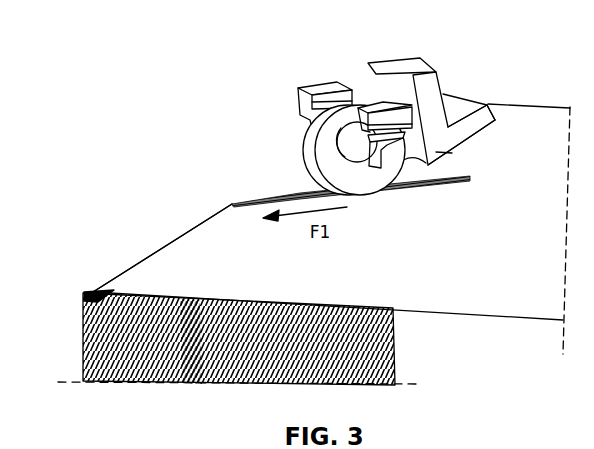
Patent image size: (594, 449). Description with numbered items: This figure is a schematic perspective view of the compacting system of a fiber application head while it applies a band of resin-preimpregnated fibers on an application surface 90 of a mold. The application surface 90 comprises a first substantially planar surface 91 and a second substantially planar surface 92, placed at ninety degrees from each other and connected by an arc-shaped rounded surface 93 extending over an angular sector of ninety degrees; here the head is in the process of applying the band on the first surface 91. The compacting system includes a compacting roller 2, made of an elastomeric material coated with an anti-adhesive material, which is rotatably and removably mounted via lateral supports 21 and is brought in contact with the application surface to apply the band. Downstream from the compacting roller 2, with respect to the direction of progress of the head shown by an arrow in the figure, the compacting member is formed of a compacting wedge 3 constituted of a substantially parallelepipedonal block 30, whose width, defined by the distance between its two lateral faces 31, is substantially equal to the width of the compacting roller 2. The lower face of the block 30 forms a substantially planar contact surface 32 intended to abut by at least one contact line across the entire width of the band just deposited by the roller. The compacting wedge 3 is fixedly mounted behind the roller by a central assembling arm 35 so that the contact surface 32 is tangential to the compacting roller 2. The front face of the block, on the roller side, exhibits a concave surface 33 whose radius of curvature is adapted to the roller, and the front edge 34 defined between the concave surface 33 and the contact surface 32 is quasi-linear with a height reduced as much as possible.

The compacting roller 2 is at (308, 145).
The compacting wedge 3 is at (447, 120).
The lateral supports 21 is at (302, 97).
The block 30 is at (474, 102).
The lateral faces 31 is at (480, 128).
The contact surface 32 is at (440, 152).
The concave surface 33 is at (431, 183).
The front edge 34 is at (400, 186).
The central assembling arm 35 is at (380, 62).
The application surface 90 is at (212, 235).
The first substantially planar surface 91 is at (168, 267).
The second substantially planar surface 92 is at (83, 352).
The arc-shaped rounded surface 93 is at (88, 291).